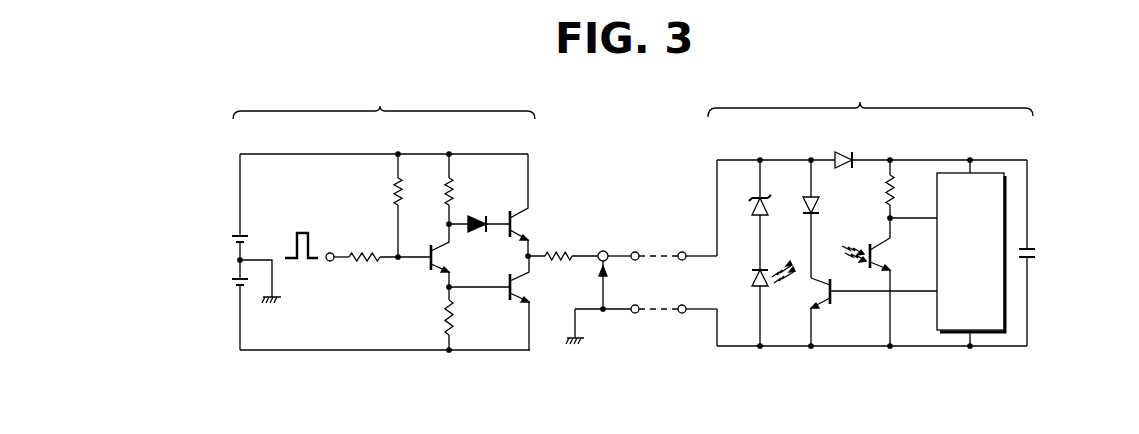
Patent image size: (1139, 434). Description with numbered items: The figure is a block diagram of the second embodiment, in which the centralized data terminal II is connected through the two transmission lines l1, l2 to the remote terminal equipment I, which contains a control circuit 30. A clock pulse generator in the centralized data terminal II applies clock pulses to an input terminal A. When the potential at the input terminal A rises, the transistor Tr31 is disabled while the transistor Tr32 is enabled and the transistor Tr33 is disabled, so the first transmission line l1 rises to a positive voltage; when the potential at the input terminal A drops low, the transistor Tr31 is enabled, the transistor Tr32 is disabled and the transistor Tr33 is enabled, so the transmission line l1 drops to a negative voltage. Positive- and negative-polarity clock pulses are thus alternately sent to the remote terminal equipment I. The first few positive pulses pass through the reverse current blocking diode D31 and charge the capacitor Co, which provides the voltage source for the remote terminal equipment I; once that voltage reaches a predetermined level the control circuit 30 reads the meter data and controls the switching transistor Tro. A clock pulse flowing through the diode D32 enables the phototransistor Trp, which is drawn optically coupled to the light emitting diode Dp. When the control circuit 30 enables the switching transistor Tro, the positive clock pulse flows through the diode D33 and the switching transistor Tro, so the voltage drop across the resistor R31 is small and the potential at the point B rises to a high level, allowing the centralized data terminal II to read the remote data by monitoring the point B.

The centralized data terminal II is at (364, 91).
The remote terminal equipment I is at (890, 84).
The input terminal A is at (328, 246).
The point B is at (602, 245).
The transistor Tr31 is at (440, 271).
The transistor Tr32 is at (518, 213).
The transistor Tr33 is at (521, 298).
The resistor R31 is at (558, 247).
The first transmission line l1 is at (662, 245).
The second transmission line l2 is at (674, 300).
The reverse current blocking diode D31 is at (840, 152).
The diode D32 is at (754, 217).
The diode D33 is at (818, 207).
The light emitting diode Dp is at (752, 279).
The switching transistor Tro is at (826, 293).
The phototransistor Trp is at (877, 250).
The capacitor Co is at (1038, 253).
The control circuit 30 is at (987, 334).